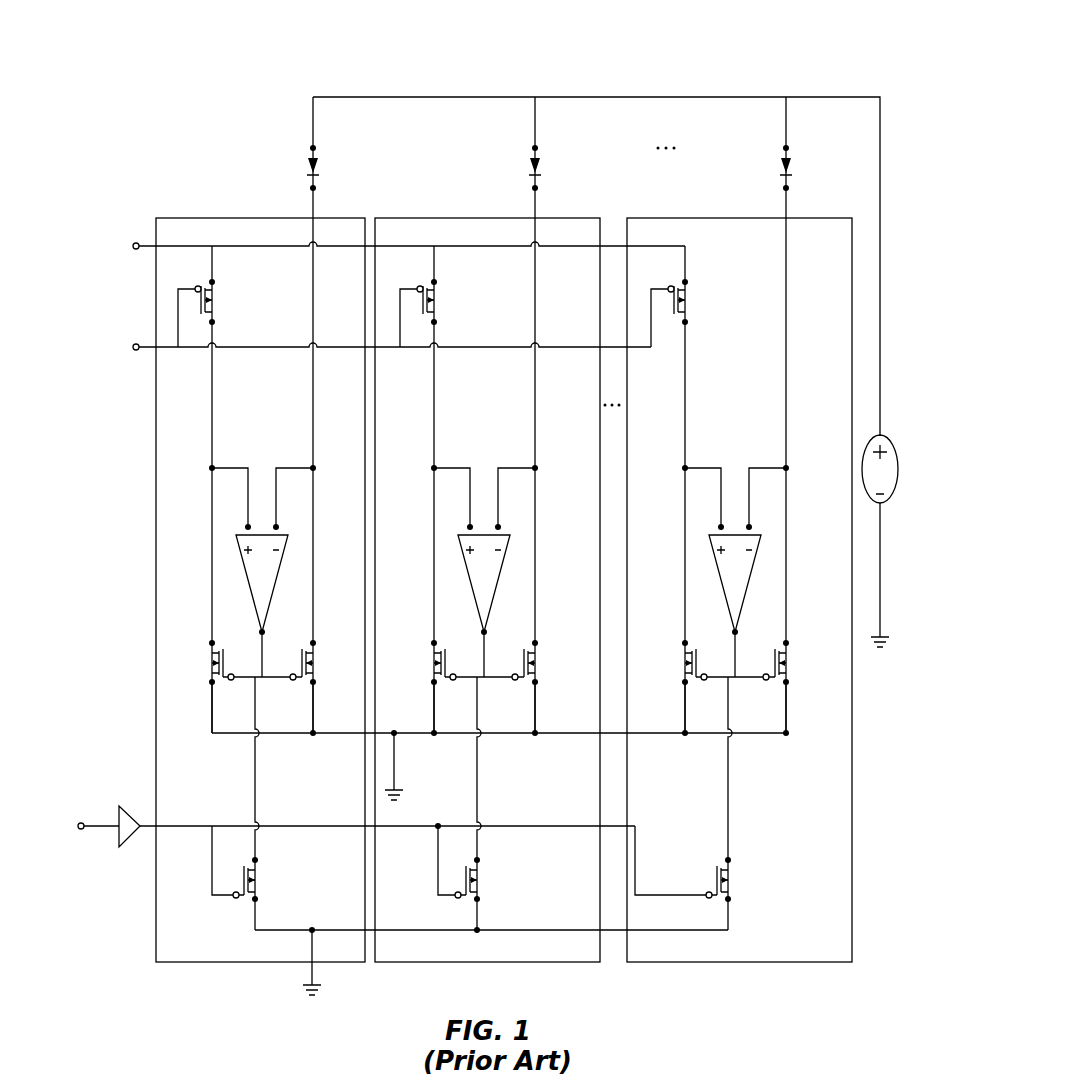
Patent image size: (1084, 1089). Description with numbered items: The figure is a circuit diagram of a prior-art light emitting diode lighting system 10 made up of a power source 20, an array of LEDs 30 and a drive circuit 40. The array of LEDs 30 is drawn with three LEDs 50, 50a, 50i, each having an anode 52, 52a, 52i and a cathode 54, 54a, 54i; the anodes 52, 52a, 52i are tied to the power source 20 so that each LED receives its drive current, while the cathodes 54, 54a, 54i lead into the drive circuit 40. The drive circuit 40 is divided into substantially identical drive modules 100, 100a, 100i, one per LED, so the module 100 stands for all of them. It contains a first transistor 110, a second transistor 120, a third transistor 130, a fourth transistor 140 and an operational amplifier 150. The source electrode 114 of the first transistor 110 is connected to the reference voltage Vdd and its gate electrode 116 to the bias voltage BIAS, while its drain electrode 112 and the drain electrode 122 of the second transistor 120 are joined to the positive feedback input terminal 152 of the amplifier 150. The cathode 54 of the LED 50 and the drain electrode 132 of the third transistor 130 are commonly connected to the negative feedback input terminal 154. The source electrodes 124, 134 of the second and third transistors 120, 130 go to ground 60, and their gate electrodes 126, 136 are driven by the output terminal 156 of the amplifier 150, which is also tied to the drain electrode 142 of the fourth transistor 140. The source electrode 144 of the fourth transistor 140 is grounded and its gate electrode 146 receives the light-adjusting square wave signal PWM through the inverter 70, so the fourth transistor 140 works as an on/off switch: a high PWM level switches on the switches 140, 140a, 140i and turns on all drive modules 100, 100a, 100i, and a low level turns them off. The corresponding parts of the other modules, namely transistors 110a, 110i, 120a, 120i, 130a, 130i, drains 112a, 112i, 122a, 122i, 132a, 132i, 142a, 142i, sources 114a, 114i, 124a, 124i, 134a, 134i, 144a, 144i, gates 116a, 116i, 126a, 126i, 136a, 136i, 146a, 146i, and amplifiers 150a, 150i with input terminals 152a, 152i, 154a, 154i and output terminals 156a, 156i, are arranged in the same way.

The light emitting diode lighting system 10 is at (577, 54).
The power source 20 is at (884, 437).
The array of LEDs 30 is at (302, 166).
The drive circuit 40 is at (134, 527).
The LED 50 is at (327, 165).
The LED 50a is at (579, 165).
The LED 50i is at (826, 165).
The anode 52 is at (316, 146).
The anode 52a is at (565, 136).
The anode 52i is at (813, 136).
The cathode 54 is at (316, 190).
The cathode 54a is at (569, 198).
The cathode 54i is at (817, 198).
The ground 60 is at (310, 977).
The inverter 70 is at (126, 808).
The drive module 100 is at (228, 218).
The drive module 100a is at (487, 576).
The drive module 100i is at (739, 576).
The first transistor 110 is at (222, 300).
The first transistor 110a is at (478, 295).
The first transistor 110i is at (725, 295).
The drain electrode 112 is at (215, 323).
The drain electrode 112a is at (472, 329).
The drain electrode 112i is at (719, 329).
The source electrode 114 is at (215, 281).
The source electrode 114a is at (471, 268).
The source electrode 114i is at (718, 268).
The gate electrode 116 is at (195, 288).
The gate electrode 116a is at (401, 299).
The gate electrode 116i is at (652, 299).
The second transistor 120 is at (206, 663).
The second transistor 120a is at (411, 682).
The second transistor 120i is at (663, 682).
The drain electrode 122 is at (210, 641).
The drain electrode 122a is at (409, 622).
The drain electrode 122i is at (662, 622).
The source electrode 124 is at (210, 684).
The source electrode 124a is at (429, 725).
The source electrode 124i is at (677, 725).
The gate electrode 126 is at (231, 680).
The gate electrode 126a is at (460, 701).
The gate electrode 126i is at (710, 701).
The third transistor 130 is at (320, 663).
The third transistor 130a is at (561, 682).
The third transistor 130i is at (808, 682).
The drain electrode 132 is at (316, 641).
The drain electrode 132a is at (564, 622).
The drain electrode 132i is at (811, 622).
The source electrode 134 is at (316, 684).
The source electrode 134a is at (556, 725).
The source electrode 134i is at (804, 725).
The gate electrode 136 is at (292, 680).
The gate electrode 136a is at (508, 701).
The gate electrode 136i is at (758, 701).
The fourth transistor 140 is at (266, 877).
The fourth transistor 140a is at (521, 874).
The fourth transistor 140i is at (768, 874).
The drain electrode 142 is at (258, 859).
The drain electrode 142a is at (514, 845).
The drain electrode 142i is at (761, 845).
The source electrode 144 is at (258, 900).
The source electrode 144a is at (514, 909).
The source electrode 144i is at (761, 909).
The gate electrode 146 is at (235, 898).
The gate electrode 146a is at (430, 877).
The gate electrode 146i is at (676, 877).
The operational amplifier 150 is at (280, 585).
The operational amplifier 150a is at (526, 583).
The operational amplifier 150i is at (773, 583).
The positive feedback input terminal 152 is at (246, 526).
The positive feedback input terminal 152a is at (427, 499).
The positive feedback input terminal 152i is at (680, 499).
The negative feedback input terminal 154 is at (279, 526).
The negative feedback input terminal 154a is at (544, 499).
The negative feedback input terminal 154i is at (792, 499).
The output terminal 156 is at (260, 630).
The output terminal 156a is at (434, 620).
The output terminal 156i is at (687, 620).